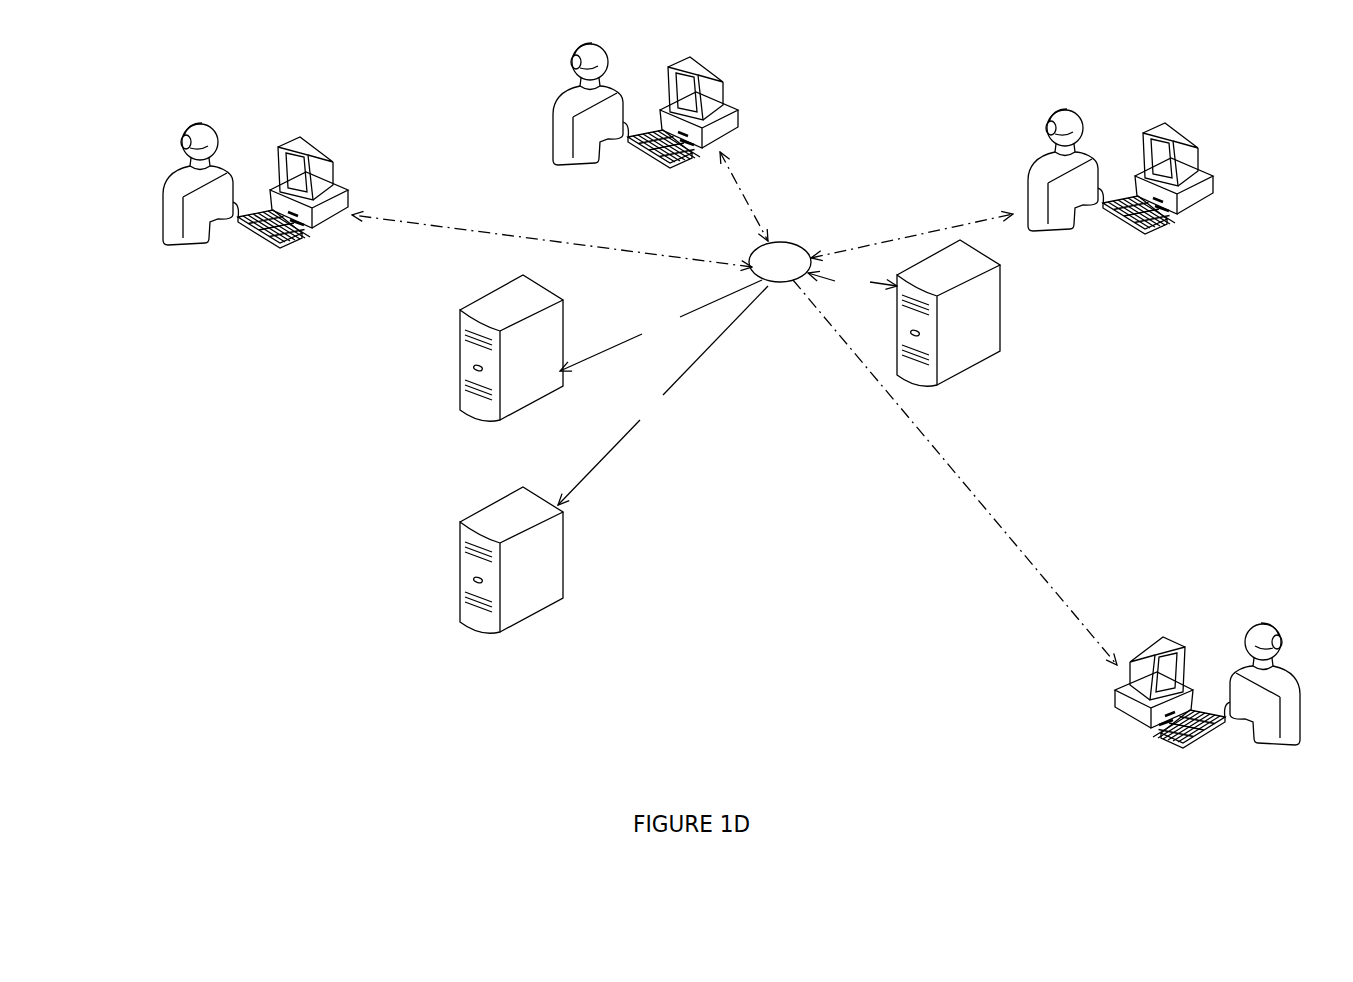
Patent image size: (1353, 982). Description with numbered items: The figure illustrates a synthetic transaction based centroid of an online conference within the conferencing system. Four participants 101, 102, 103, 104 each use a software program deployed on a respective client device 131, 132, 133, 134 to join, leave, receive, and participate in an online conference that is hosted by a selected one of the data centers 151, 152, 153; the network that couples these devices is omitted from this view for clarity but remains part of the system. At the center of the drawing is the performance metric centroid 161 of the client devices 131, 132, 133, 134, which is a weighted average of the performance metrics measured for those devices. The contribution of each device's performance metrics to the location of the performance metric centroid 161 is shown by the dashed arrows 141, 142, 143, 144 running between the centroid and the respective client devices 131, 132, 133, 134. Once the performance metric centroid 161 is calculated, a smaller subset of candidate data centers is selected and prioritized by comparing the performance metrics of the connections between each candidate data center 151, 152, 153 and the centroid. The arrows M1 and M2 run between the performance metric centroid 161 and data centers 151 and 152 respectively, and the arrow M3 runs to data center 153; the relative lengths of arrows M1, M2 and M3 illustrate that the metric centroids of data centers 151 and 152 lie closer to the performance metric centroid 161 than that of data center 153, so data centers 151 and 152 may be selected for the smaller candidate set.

The participant 101 is at (182, 165).
The participant 102 is at (572, 88).
The participant 103 is at (1050, 152).
The participant 104 is at (1265, 620).
The client device 131 is at (315, 146).
The client device 132 is at (705, 65).
The client device 133 is at (1180, 133).
The client device 134 is at (1148, 731).
The arrow 141 is at (444, 225).
The arrow 142 is at (745, 193).
The arrow 143 is at (958, 228).
The arrow 144 is at (1010, 540).
The data center 151 is at (565, 338).
The data center 152 is at (975, 372).
The data center 153 is at (565, 555).
The performance metric centroid 161 is at (764, 273).
The arrow M1 is at (661, 325).
The arrow M2 is at (852, 283).
The arrow M3 is at (663, 395).